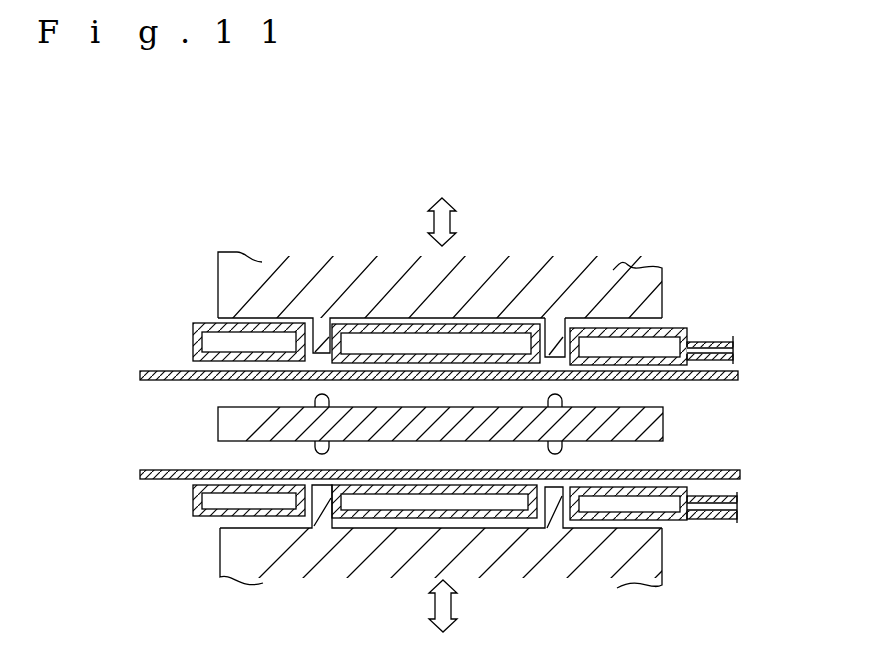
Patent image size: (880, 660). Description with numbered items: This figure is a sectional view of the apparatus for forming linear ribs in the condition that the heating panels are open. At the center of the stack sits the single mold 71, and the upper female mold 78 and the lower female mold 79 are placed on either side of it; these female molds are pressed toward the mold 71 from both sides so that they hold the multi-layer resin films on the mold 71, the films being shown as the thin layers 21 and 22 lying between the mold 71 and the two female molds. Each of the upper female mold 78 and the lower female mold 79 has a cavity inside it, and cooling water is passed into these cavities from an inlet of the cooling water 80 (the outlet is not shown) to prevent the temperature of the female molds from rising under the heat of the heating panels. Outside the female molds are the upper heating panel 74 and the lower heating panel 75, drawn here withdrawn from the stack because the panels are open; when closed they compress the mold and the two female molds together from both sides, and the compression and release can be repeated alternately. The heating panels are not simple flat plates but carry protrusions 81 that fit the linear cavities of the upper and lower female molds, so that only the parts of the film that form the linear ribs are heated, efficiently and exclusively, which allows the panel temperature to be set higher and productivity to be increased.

The first plate 21 is at (727, 378).
The second plate 22 is at (698, 472).
The mold 71 is at (233, 423).
The upper heating panel 74 is at (238, 287).
The lower heating panel 75 is at (645, 553).
The upper female mold 78 is at (667, 328).
The lower female mold 79 is at (677, 523).
The inlet of the cooling water 80 is at (702, 342).
The protrusions 81 is at (555, 347).